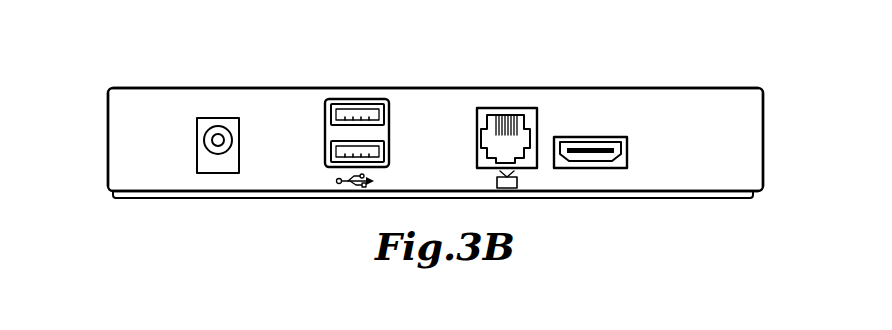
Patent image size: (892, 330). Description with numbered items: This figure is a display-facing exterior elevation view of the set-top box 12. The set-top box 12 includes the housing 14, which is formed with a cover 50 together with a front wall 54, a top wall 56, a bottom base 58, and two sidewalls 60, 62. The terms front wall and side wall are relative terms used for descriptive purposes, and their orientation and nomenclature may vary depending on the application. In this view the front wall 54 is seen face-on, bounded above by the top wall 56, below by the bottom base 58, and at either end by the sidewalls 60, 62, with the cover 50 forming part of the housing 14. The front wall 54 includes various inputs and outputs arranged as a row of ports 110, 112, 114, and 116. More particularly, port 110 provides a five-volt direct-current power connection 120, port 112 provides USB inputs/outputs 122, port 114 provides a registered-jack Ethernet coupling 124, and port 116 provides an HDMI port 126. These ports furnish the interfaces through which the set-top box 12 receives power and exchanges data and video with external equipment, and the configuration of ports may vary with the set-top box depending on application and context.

The set-top box 12 is at (134, 76).
The housing 14 is at (116, 198).
The cover 50 is at (733, 88).
The front wall 54 is at (145, 181).
The top wall 56 is at (183, 88).
The bottom base 58 is at (277, 199).
The sidewall 60 is at (108, 140).
The sidewall 62 is at (763, 138).
The port 110 is at (233, 122).
The port 112 is at (355, 97).
The port 114 is at (510, 109).
The port 116 is at (590, 137).
The 5V dc power connection 120 is at (217, 173).
The USB inputs/outputs 122 is at (335, 169).
The RJ-45 coupling 124 is at (527, 167).
The HDMI port 126 is at (618, 169).